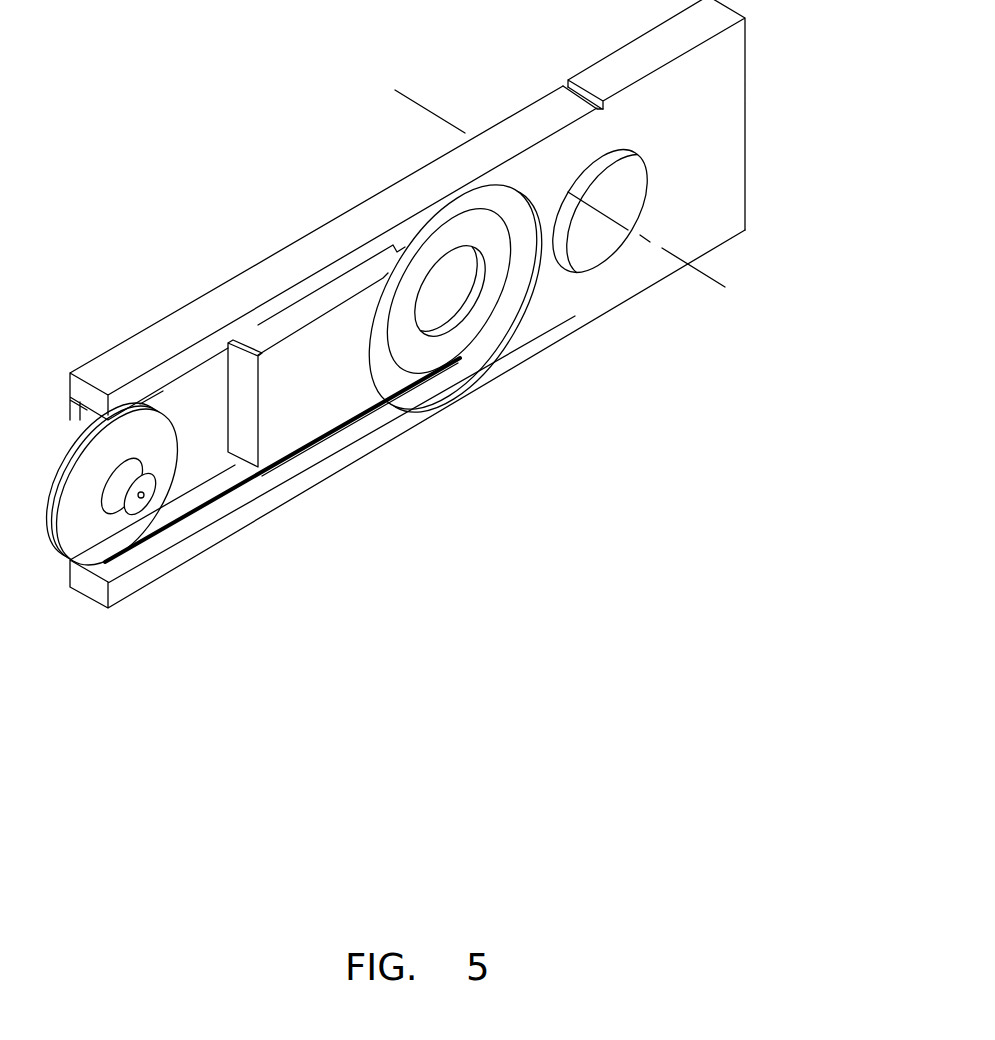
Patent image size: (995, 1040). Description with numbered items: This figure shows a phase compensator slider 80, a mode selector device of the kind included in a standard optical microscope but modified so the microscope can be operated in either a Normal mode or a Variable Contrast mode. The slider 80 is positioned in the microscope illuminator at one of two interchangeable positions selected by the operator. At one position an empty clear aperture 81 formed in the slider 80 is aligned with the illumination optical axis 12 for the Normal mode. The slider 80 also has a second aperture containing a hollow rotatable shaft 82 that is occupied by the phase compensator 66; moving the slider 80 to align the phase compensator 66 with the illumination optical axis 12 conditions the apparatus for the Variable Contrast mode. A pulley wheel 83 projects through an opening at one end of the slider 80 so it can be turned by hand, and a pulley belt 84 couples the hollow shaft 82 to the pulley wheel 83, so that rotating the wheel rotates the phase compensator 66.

The phase compensator slider 80 is at (705, 192).
The illumination optical axis 12 is at (703, 277).
The empty clear aperture 81 is at (570, 215).
The phase compensator 66 is at (443, 293).
The hollow rotatable shaft 82 is at (415, 345).
The pulley belt 84 is at (223, 497).
The pulley wheel 83 is at (98, 530).